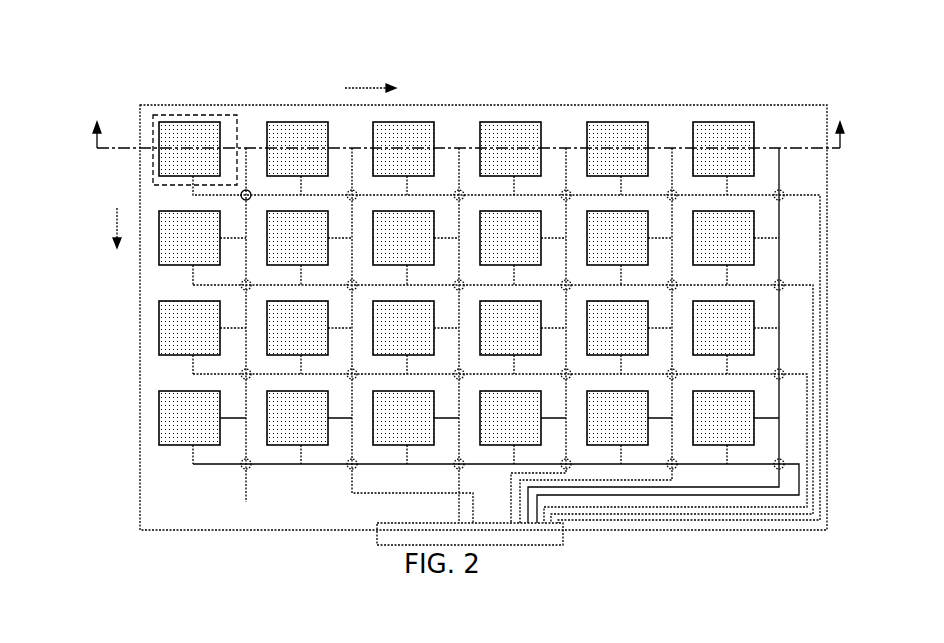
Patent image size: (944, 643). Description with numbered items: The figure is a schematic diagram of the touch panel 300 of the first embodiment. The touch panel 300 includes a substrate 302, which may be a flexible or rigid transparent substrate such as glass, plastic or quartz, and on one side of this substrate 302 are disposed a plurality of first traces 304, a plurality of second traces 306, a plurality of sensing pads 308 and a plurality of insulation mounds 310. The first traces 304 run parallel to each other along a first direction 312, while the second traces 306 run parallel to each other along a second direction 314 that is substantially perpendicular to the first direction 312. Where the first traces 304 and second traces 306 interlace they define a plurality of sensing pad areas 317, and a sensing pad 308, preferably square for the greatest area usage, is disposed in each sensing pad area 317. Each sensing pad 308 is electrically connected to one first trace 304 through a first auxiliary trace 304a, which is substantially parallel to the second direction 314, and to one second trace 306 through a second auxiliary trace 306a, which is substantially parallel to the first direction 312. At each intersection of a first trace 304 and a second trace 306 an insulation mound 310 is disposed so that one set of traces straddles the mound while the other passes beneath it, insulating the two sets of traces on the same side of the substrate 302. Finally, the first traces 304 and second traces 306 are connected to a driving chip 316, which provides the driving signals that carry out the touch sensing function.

The touch panel 300 is at (92, 82).
The substrate 302 is at (160, 105).
The first traces 304 is at (246, 492).
The first auxiliary trace 304a is at (207, 129).
The second traces 306 is at (800, 192).
The second auxiliary trace 306a is at (158, 185).
The sensing pad 308 is at (189, 149).
The insulation mound 310 is at (250, 188).
The first direction 312 is at (104, 227).
The second direction 314 is at (370, 78).
The driving chip 316 is at (564, 537).
The sensing pad area 317 is at (197, 115).